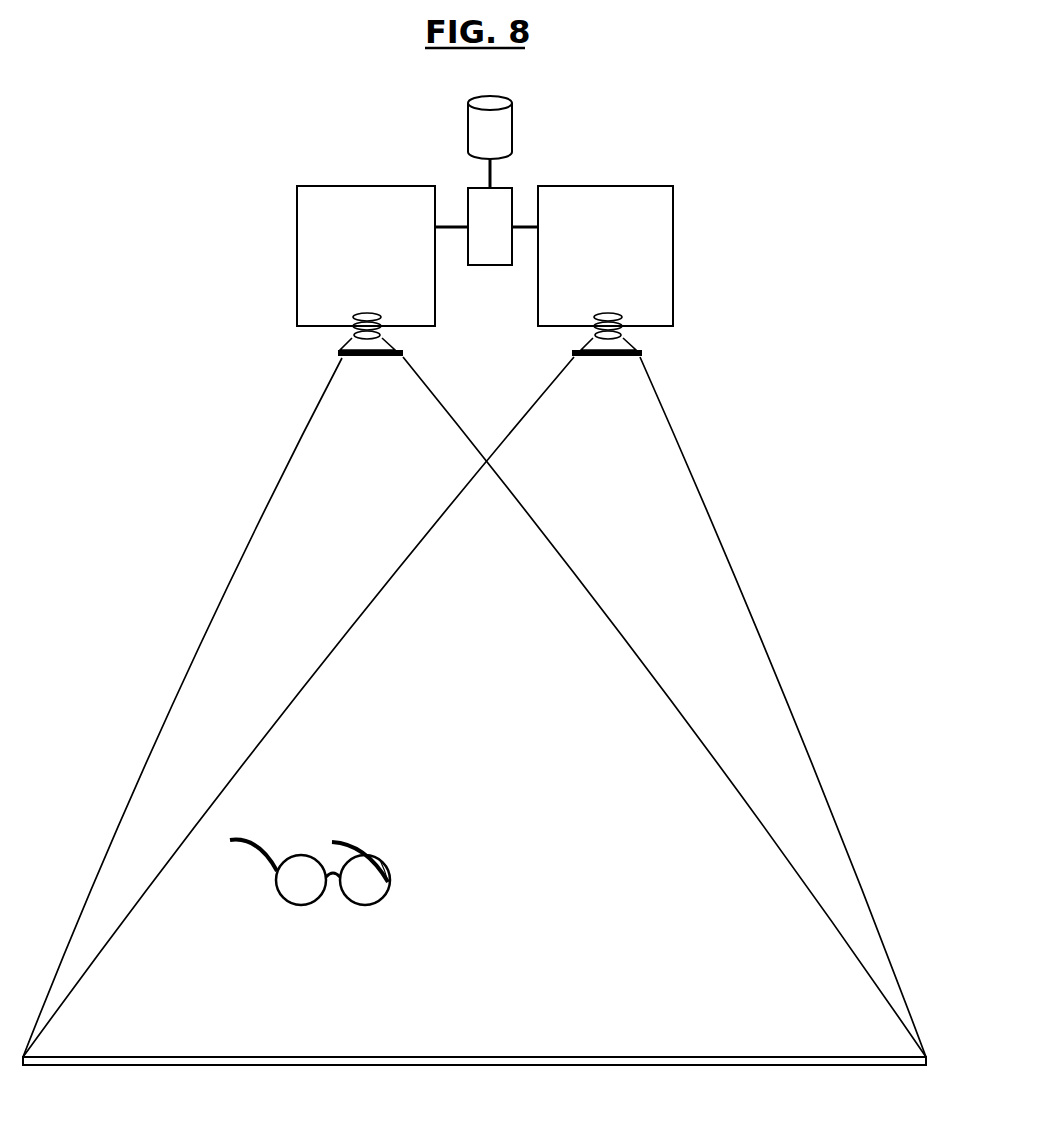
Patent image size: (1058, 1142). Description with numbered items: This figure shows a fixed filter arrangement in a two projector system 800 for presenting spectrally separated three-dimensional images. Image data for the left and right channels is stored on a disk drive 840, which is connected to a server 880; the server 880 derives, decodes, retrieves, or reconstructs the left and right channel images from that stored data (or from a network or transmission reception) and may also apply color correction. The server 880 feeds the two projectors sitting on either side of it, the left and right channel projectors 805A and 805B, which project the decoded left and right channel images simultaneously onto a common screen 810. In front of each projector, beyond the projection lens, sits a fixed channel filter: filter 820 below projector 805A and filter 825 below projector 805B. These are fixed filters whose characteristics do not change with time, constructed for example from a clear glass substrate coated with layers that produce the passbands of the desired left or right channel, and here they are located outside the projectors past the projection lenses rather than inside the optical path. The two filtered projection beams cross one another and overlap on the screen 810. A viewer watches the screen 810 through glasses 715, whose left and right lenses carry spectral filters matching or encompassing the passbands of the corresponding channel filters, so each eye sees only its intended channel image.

The two projector system 800 is at (120, 339).
The left channel projector 805A is at (410, 308).
The right channel projector 805B is at (660, 308).
The channel filter 820 is at (335, 355).
The second polarizing filter 825 is at (570, 357).
The disk drive 840 is at (508, 143).
The server 880 is at (515, 282).
The screen 810 is at (697, 1057).
The glasses 715 is at (273, 886).